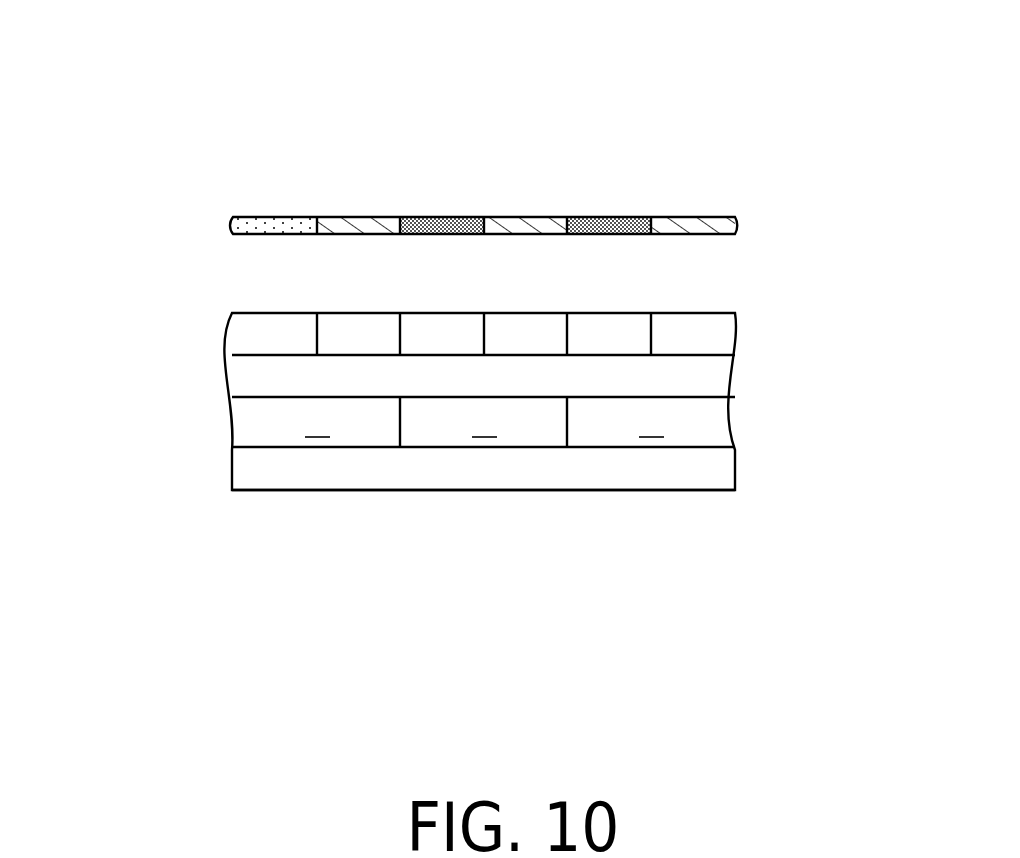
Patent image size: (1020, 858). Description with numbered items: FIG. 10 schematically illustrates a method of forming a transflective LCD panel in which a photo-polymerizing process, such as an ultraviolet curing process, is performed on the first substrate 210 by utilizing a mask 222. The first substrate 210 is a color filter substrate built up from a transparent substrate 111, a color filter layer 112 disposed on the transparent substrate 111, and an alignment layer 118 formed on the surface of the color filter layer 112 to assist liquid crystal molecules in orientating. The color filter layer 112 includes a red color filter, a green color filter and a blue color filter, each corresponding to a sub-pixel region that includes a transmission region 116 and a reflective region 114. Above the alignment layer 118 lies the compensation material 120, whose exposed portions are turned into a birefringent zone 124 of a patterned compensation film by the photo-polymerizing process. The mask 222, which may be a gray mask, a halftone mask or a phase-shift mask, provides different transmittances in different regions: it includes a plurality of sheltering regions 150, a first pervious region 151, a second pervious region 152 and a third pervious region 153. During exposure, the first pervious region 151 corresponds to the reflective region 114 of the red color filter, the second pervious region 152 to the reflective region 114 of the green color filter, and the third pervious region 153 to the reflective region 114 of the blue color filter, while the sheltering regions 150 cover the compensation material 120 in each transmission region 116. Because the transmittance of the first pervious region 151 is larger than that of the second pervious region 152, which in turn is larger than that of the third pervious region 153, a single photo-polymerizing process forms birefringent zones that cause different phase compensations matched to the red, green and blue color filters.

The reflective region 114 is at (233, 70).
The transmission region 116 is at (400, 70).
The sheltering regions 150 is at (363, 218).
The first pervious region 151 is at (282, 218).
The second pervious region 152 is at (440, 218).
The third pervious region 153 is at (593, 218).
The mask 222 is at (396, 169).
The first substrate 210 is at (569, 332).
The compensation material 120 is at (573, 319).
The birefringent zone 124 is at (304, 348).
The alignment layer 118 is at (717, 382).
The color filter layer 112 is at (738, 418).
The transparent substrate 111 is at (717, 472).